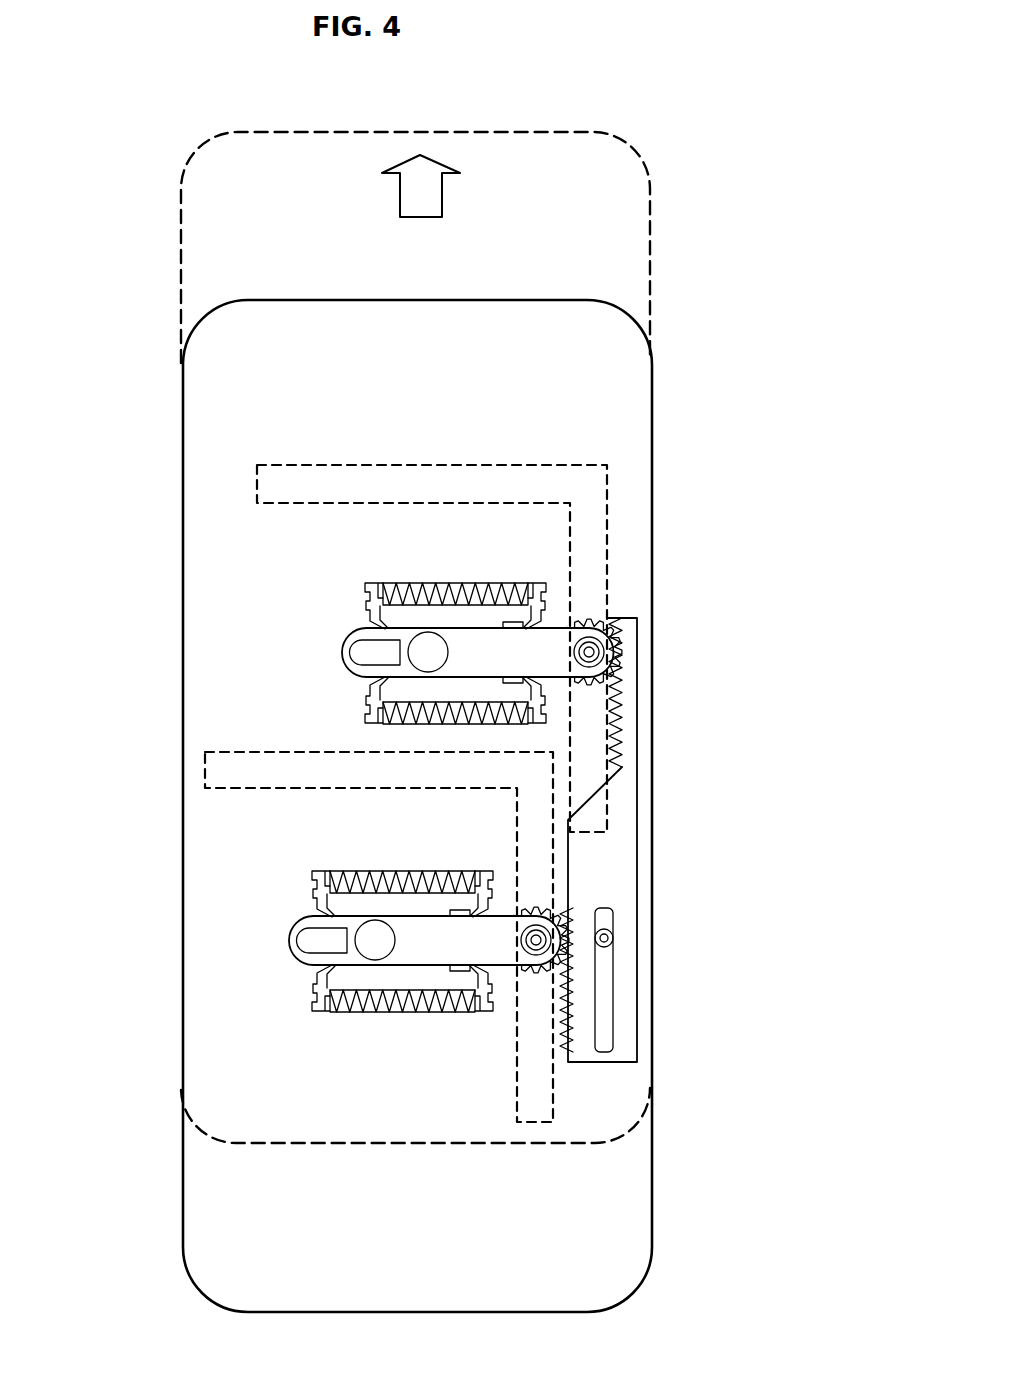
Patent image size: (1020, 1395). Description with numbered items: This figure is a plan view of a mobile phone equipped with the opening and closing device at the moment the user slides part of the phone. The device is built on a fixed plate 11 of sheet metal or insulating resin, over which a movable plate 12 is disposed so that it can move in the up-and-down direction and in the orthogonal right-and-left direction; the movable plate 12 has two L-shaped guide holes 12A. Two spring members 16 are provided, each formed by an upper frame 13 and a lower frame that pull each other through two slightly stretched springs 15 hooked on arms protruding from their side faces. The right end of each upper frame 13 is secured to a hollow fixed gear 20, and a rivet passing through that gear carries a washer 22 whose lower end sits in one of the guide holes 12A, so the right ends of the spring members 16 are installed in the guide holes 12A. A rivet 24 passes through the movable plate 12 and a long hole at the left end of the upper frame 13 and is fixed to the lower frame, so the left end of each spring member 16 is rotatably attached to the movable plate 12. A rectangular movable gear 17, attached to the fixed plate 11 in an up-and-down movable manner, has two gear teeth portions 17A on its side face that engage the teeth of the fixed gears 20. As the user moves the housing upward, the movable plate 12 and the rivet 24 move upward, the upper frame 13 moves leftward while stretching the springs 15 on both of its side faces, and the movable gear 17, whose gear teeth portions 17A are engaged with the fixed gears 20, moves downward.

The fixed plate 11 is at (620, 382).
The movable plate 12 is at (620, 238).
The guide hole 12A is at (273, 483).
The upper frame 13 is at (342, 644).
The spring 15 is at (493, 590).
The spring member 16 is at (328, 662).
The movable gear 17 is at (618, 848).
The gear teeth portion 17A is at (623, 693).
The fixed gear 20 is at (598, 622).
The washer 22 is at (613, 650).
The rivet 24 is at (427, 652).